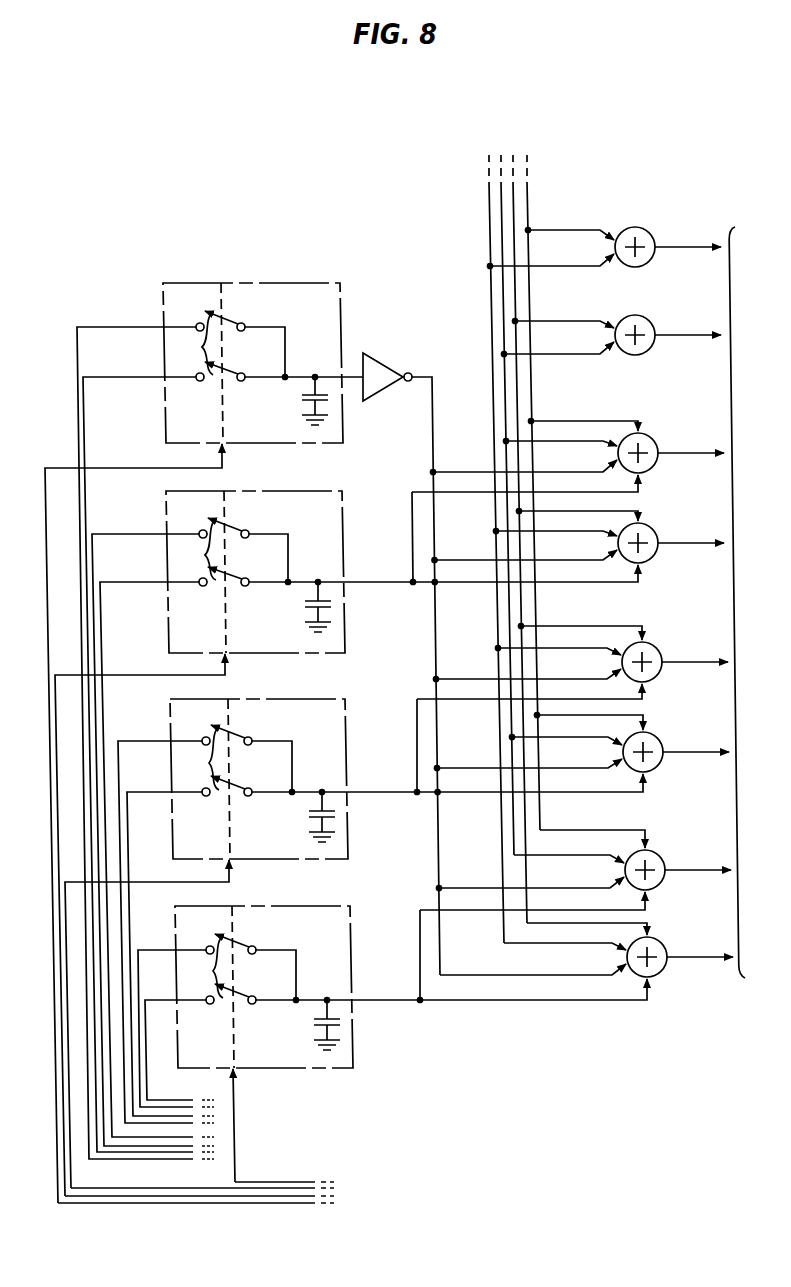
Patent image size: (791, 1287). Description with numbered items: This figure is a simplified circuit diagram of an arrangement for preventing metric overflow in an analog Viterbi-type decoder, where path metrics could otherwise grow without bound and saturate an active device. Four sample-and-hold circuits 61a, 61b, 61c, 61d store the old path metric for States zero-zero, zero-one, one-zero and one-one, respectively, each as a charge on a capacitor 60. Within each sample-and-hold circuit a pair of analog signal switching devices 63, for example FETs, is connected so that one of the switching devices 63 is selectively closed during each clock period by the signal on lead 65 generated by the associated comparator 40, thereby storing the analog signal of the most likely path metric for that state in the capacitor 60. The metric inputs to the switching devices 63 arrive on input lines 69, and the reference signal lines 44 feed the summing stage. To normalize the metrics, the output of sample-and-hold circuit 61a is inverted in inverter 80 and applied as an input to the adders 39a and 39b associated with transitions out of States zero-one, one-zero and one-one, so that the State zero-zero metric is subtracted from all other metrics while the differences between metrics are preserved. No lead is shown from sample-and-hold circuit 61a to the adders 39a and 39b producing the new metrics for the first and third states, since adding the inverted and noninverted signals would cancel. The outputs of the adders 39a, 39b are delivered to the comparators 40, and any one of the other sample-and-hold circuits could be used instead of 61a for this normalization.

The adder 39a is at (640, 225).
The adder 39b is at (640, 313).
The comparator 40 is at (746, 602).
The reference signal lines 44 is at (528, 194).
The capacitor 60 is at (304, 398).
The sample-and-hold circuit 61a is at (280, 283).
The sample-and-hold circuit 61b is at (283, 491).
The sample-and-hold circuit 61c is at (290, 699).
The sample-and-hold circuit 61d is at (293, 906).
The analog signal switching devices 63 is at (202, 347).
The lead 65 is at (285, 1203).
The input signal lines 69 is at (147, 1098).
The inverter 80 is at (370, 352).